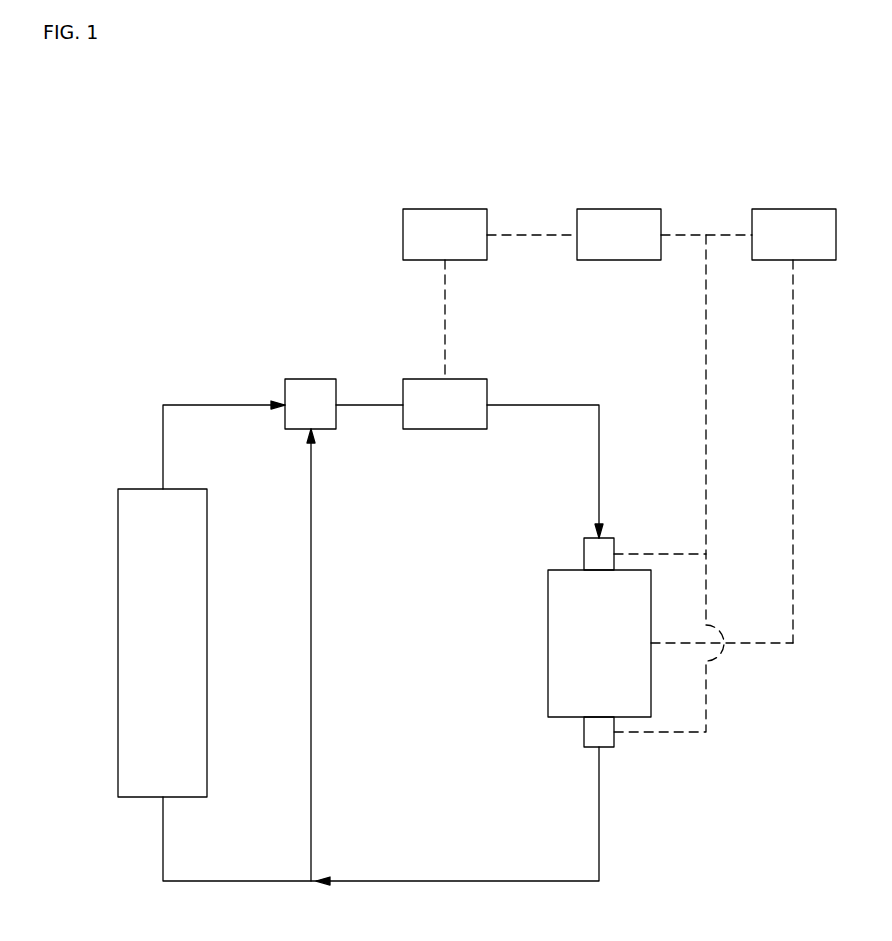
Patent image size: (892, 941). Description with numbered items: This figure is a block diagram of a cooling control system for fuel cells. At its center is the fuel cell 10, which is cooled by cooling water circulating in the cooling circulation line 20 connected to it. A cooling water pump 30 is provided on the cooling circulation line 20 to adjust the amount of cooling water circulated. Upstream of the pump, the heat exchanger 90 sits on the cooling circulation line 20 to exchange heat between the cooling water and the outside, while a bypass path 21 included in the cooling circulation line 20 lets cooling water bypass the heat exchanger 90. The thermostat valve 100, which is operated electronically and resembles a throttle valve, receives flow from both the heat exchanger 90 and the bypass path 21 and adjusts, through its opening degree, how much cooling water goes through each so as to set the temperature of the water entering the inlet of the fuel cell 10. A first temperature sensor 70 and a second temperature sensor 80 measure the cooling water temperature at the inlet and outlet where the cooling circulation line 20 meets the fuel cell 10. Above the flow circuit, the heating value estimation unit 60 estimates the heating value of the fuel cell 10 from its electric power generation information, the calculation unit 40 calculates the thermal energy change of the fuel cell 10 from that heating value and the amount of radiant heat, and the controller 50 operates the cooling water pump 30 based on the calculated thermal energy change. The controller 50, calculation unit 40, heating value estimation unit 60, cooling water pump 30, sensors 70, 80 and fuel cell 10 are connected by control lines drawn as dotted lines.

The fuel cell 10 is at (651, 697).
The cooling circulation line 20 is at (557, 405).
The bypass path 21 is at (311, 671).
The cooling water pump 30 is at (445, 429).
The calculation unit 40 is at (619, 209).
The controller 50 is at (445, 209).
The heating value estimation unit 60 is at (793, 209).
The first temperature sensor 70 is at (614, 548).
The second temperature sensor 80 is at (614, 742).
The heat exchanger 90 is at (118, 655).
The thermostat valve 100 is at (311, 379).